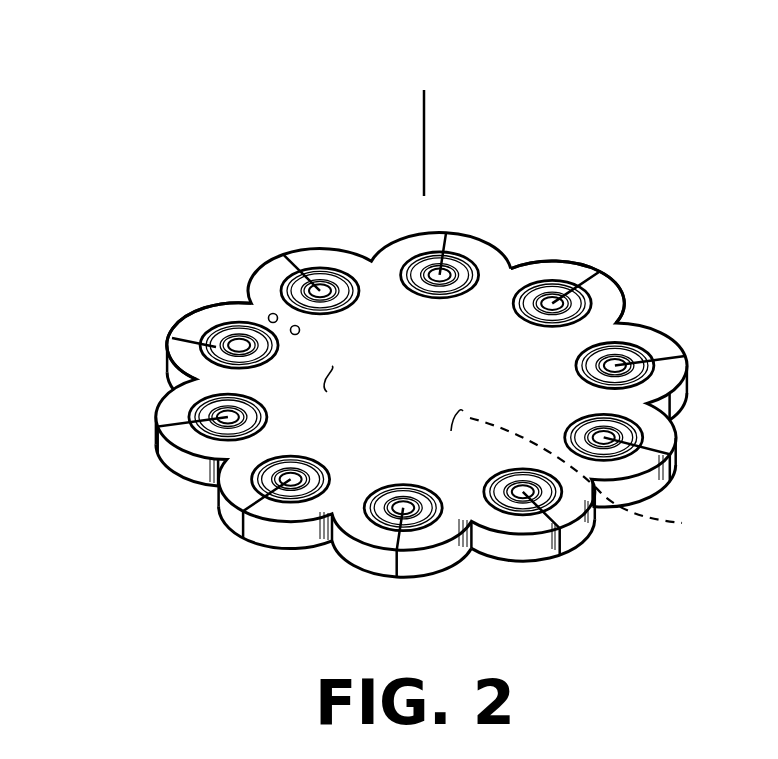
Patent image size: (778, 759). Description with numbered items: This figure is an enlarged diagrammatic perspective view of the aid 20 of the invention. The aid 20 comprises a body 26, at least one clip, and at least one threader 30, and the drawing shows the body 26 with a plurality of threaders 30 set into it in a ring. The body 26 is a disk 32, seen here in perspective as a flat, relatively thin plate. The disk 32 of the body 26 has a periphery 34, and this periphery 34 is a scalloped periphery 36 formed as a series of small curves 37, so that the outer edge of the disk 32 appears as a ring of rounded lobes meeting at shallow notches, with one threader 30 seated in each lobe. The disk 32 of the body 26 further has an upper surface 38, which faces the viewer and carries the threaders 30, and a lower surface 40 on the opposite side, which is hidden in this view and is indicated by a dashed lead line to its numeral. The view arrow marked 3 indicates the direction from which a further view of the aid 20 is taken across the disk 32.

The scalloped disk body 20 is at (116, 192).
The concentric ring insert 30 is at (323, 265).
The lobe 34 is at (565, 220).
The lobe outer wall 36 is at (567, 292).
The lobe edge 37 is at (562, 242).
The lobe 26 is at (163, 308).
The lobe wall 32 is at (222, 306).
The radial slit 38 is at (172, 338).
The hidden channel 40 is at (589, 479).
The view direction of FIG. 3 is at (424, 213).